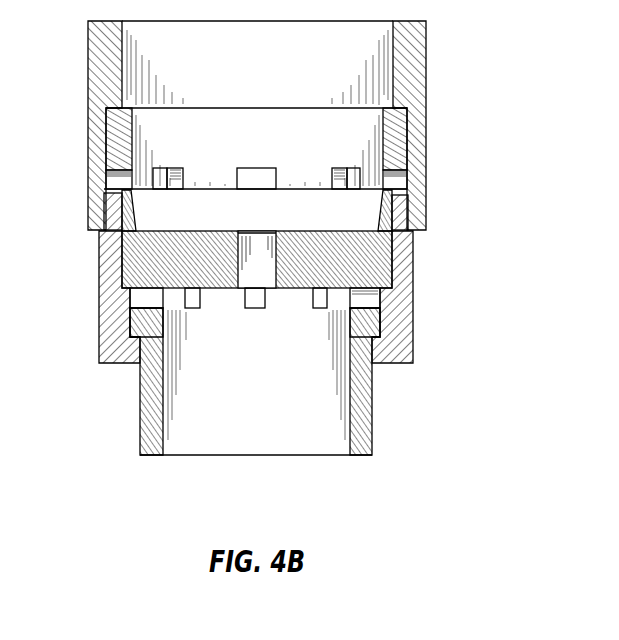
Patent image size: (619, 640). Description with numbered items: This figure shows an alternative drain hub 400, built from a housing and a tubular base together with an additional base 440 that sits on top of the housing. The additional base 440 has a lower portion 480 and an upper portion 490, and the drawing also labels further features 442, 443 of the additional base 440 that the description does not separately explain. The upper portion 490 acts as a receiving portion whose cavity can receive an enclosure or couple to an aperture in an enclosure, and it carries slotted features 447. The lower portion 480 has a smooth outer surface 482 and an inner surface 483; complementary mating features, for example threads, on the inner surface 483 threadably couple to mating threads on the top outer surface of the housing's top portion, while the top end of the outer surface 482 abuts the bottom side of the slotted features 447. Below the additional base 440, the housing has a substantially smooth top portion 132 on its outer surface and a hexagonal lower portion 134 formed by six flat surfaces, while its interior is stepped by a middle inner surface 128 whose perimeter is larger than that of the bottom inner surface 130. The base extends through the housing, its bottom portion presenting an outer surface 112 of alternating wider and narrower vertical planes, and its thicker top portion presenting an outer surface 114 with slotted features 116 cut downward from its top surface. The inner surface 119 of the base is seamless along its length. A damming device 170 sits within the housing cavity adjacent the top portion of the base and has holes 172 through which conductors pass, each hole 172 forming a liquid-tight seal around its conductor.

The drain hub 400 is at (254, 353).
The additional base 440 is at (259, 128).
The cover wall 442 is at (100, 45).
The upper chamber 443 is at (277, 75).
The slotted features 447 is at (338, 177).
The lower portion 480 is at (80, 190).
The outer surface 482 is at (417, 200).
The inner surface 483 is at (100, 198).
The upper portion 490 is at (80, 130).
The outer surface 112 is at (295, 373).
The outer surface 114 is at (375, 320).
The slotted features 116 is at (192, 297).
The inner surface 119 is at (277, 383).
The middle inner surface 128 is at (128, 298).
The bottom inner surface 130 is at (372, 353).
The top portion 132 is at (97, 229).
The lower portion 134 is at (403, 272).
The damming device 170 is at (354, 267).
The hole 172 is at (257, 240).